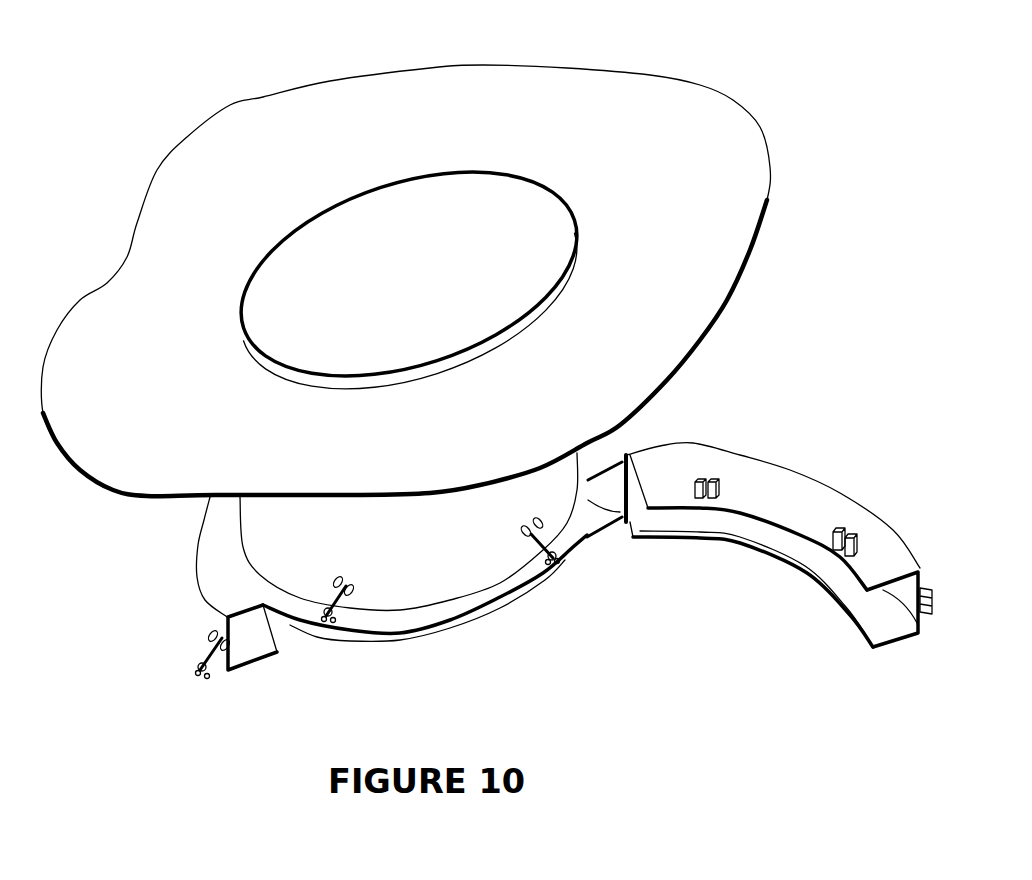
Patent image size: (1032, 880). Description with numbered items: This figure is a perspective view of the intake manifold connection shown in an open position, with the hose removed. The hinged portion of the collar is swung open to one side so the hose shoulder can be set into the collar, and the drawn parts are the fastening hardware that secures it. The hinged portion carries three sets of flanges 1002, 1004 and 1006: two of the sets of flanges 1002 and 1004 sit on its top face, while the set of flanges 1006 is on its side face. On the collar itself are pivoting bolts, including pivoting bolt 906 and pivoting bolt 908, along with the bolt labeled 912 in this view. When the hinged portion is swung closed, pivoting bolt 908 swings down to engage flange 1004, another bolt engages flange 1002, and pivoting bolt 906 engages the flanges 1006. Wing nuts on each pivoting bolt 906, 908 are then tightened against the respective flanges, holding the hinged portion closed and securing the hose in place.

The pivoting bolt 906 is at (197, 663).
The pivoting bolt 908 is at (330, 620).
The connector 912 is at (560, 560).
The set of flanges 1002 is at (698, 477).
The set of flanges 1004 is at (840, 530).
The set of flanges 1006 is at (928, 590).